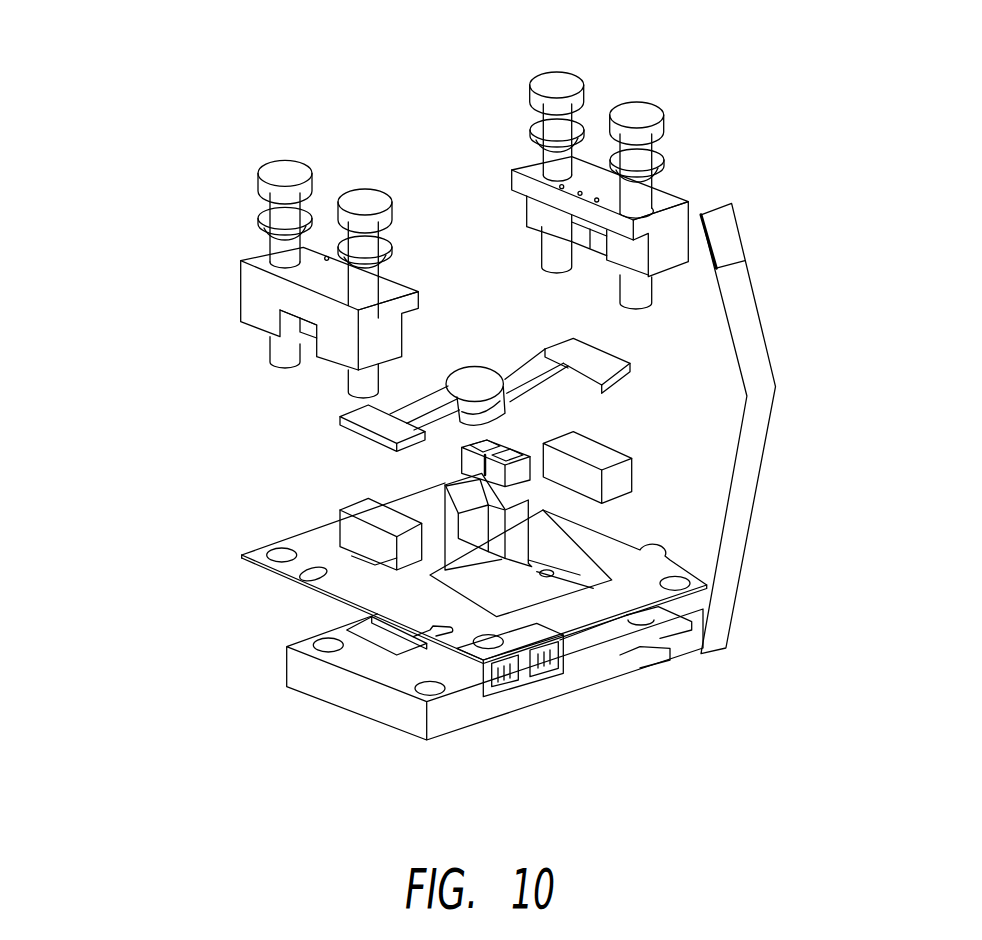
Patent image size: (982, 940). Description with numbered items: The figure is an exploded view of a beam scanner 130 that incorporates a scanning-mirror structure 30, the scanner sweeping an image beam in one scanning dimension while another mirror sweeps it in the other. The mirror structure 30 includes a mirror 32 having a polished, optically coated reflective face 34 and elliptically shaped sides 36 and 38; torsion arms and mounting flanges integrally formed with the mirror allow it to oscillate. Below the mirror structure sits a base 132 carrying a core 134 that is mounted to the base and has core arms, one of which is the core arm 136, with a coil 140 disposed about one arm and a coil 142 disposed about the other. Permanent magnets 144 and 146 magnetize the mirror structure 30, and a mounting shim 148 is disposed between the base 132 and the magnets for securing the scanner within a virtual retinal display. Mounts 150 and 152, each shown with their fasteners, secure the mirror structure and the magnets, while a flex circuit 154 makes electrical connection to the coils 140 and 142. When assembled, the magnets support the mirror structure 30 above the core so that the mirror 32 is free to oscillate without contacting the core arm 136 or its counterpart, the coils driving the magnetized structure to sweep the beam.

The beam scanner 130 is at (192, 109).
The mount 150 is at (230, 288).
The mount 152 is at (597, 97).
The flex circuit 154 is at (739, 282).
The scanning-mirror structure 30 is at (326, 421).
The mirror 32 is at (488, 364).
The reflective face 34 is at (463, 380).
The elliptically shaped side 36 is at (453, 380).
The elliptically shaped side 38 is at (512, 400).
The coil 140 is at (488, 447).
The coil 142 is at (523, 447).
The permanent magnet 146 is at (630, 442).
The permanent magnet 144 is at (363, 505).
The core arm 136 is at (468, 497).
The mounting shim 148 is at (243, 556).
The core 134 is at (492, 575).
The base 132 is at (285, 663).